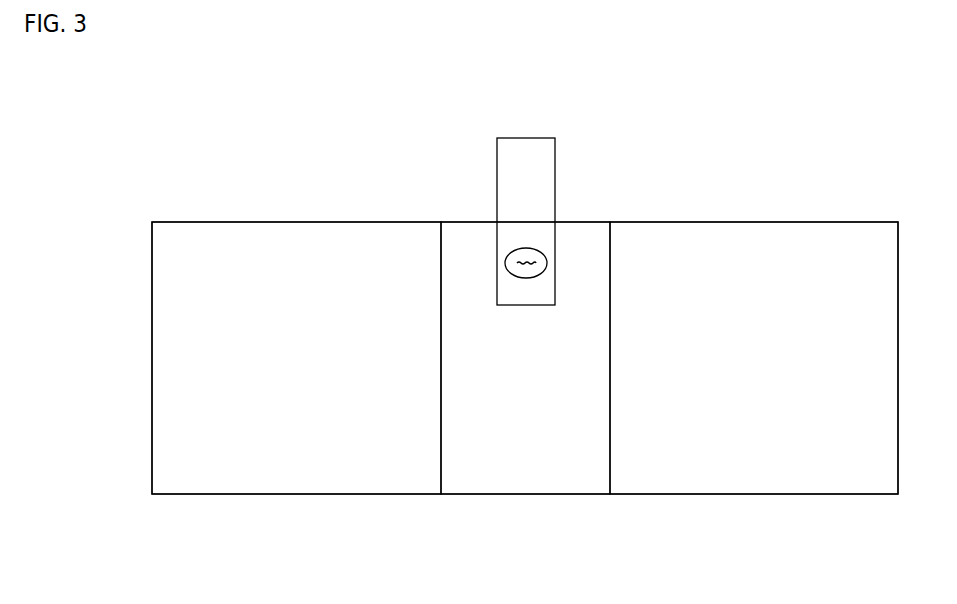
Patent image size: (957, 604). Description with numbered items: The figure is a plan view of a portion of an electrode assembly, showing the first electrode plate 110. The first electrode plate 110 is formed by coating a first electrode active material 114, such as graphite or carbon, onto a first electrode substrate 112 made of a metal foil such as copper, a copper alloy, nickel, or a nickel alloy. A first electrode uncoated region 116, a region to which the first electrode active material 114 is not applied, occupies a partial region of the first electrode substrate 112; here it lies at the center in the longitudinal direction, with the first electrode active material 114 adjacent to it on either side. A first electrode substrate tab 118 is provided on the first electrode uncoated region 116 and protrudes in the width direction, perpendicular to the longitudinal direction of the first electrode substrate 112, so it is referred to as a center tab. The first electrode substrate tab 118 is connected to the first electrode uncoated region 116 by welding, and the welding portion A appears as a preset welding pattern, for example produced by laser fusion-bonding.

The first electrode plate 110 is at (147, 85).
The first electrode substrate 112 is at (806, 219).
The first electrode active material 114 is at (297, 476).
The first electrode uncoated region 116 is at (521, 476).
The first electrode substrate tab 118 is at (526, 150).
The welding portion A is at (531, 246).